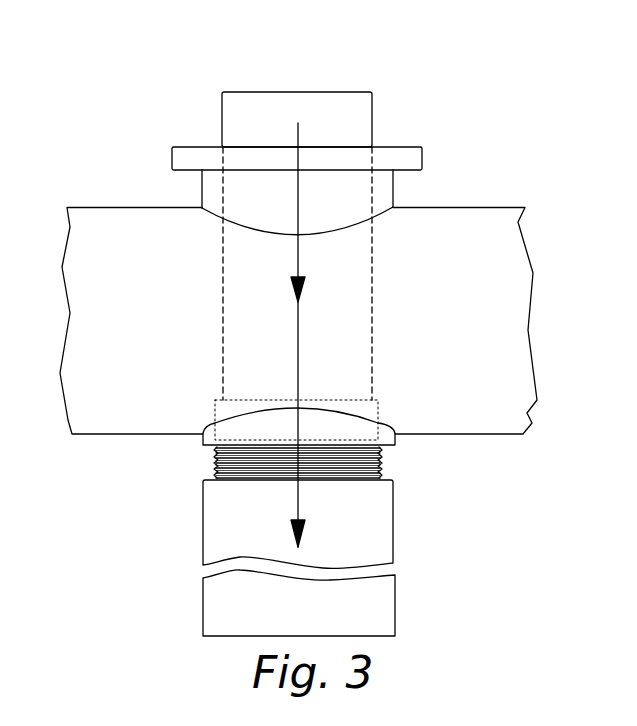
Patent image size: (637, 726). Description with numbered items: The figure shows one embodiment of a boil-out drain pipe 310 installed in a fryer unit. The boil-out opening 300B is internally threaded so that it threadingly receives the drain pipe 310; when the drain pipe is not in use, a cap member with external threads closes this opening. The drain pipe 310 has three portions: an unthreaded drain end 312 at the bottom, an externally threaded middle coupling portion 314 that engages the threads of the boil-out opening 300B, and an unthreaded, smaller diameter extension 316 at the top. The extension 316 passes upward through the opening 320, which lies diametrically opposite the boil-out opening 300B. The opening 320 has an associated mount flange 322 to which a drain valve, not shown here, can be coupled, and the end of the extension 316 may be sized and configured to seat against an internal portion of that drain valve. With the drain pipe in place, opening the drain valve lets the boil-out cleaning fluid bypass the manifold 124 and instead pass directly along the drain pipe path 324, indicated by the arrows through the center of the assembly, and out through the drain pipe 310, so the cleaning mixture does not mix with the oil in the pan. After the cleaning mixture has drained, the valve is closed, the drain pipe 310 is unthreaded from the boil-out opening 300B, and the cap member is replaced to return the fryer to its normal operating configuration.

The extension 316 is at (349, 108).
The mount flange 322 is at (202, 192).
The opening 320 is at (298, 233).
The drain pipe path 324 is at (297, 344).
The manifold 124 is at (150, 436).
The boil-out opening 300B is at (327, 408).
The externally threaded middle coupling portion 314 is at (380, 463).
The drain pipe 310 is at (395, 537).
The drain end 312 is at (258, 627).